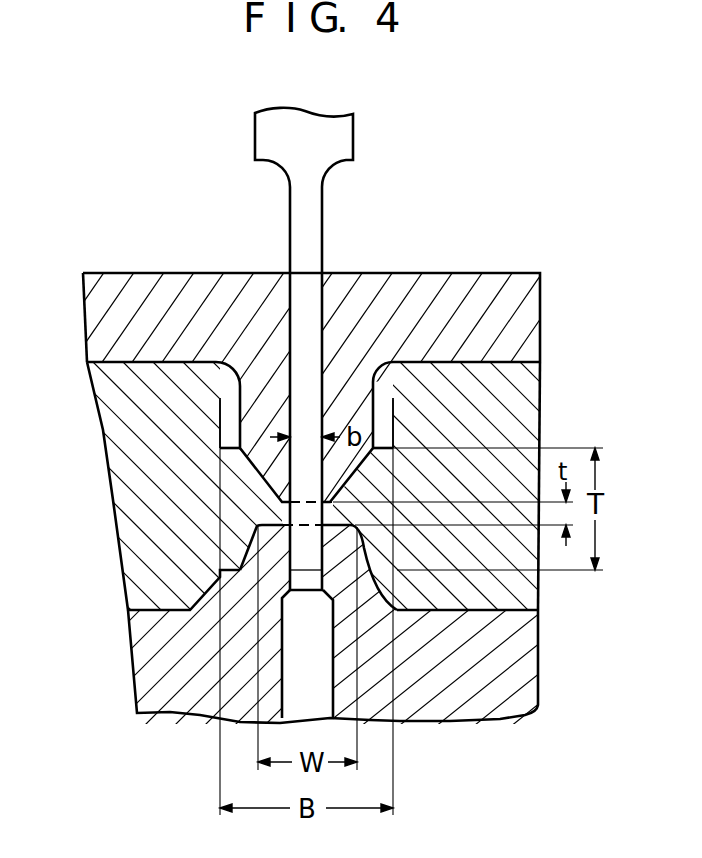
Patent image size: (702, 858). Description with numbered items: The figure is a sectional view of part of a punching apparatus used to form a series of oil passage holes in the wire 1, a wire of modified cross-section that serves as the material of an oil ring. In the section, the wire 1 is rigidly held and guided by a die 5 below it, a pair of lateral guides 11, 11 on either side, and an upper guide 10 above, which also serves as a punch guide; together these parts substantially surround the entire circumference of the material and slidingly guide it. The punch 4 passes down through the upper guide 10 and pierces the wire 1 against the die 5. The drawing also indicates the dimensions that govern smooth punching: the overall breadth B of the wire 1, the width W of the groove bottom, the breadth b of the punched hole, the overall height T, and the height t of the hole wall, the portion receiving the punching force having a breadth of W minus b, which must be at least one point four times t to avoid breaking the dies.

The wire 1 is at (383, 552).
The punch 4 is at (353, 135).
The die 5 is at (536, 672).
The upper guide 10 is at (537, 300).
The lateral guide 11 is at (525, 407).